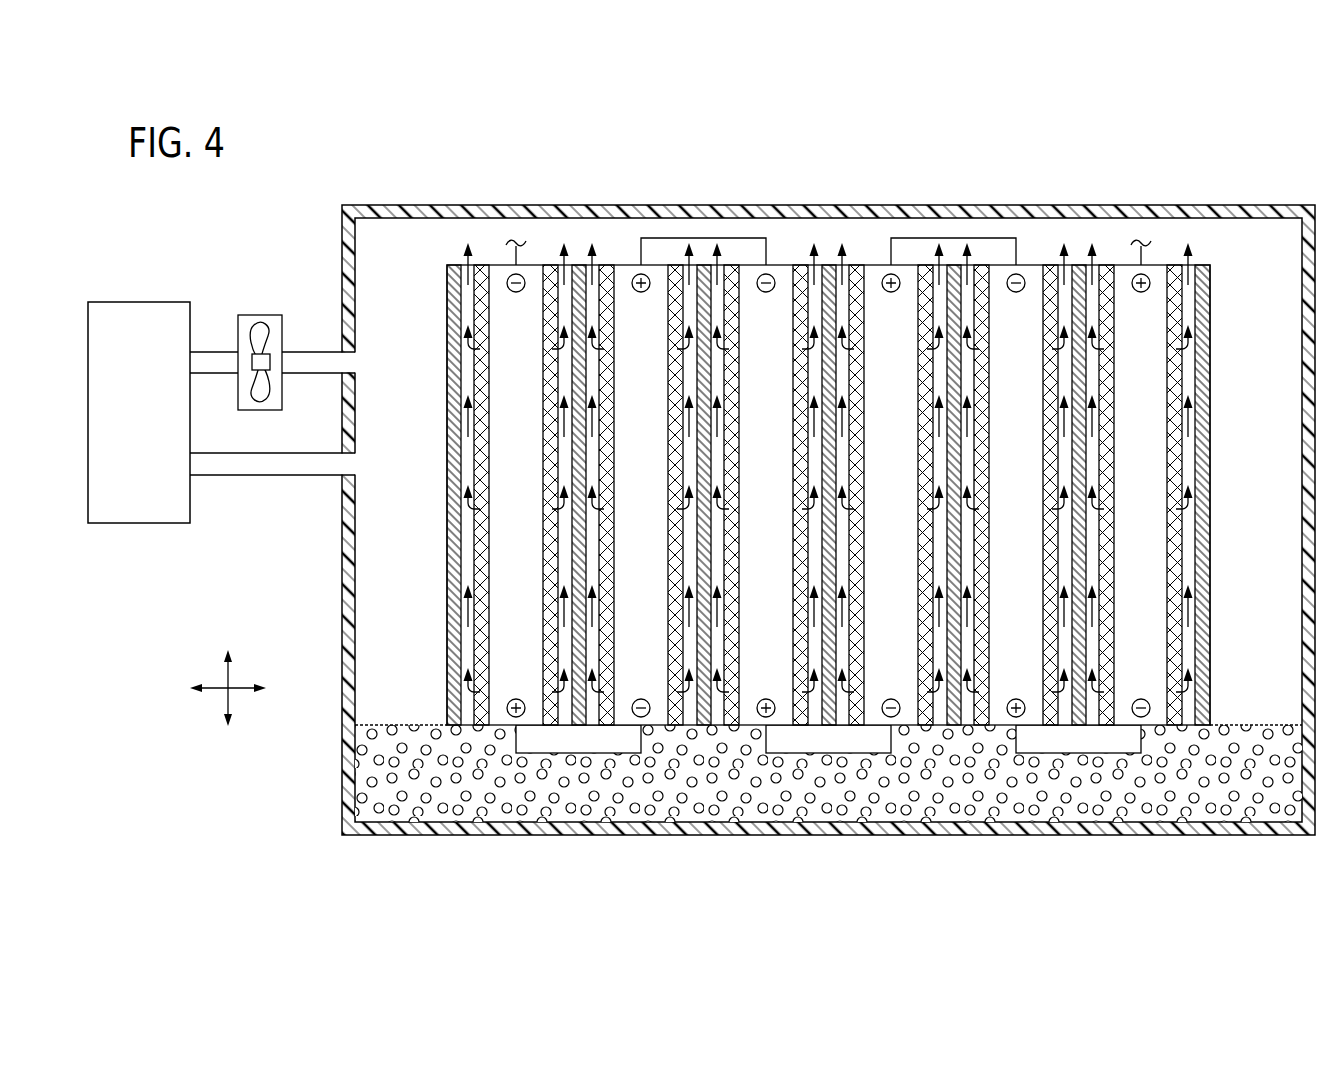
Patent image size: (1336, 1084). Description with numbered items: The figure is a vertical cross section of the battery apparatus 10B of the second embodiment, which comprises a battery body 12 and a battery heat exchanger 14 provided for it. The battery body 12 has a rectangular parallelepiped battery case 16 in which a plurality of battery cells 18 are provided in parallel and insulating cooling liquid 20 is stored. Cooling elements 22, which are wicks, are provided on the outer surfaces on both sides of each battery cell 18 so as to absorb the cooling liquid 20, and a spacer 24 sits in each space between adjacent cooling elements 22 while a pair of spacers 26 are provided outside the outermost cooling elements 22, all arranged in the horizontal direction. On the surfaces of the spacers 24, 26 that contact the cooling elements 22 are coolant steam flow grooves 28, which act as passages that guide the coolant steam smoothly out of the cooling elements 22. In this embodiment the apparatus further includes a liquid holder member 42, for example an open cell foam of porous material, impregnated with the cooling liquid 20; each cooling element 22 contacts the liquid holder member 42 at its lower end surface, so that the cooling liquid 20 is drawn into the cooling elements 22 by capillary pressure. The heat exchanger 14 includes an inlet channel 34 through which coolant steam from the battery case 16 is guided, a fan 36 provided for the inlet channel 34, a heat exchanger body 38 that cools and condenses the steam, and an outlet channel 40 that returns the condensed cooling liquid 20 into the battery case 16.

The battery apparatus 10B is at (317, 172).
The battery body 12 is at (778, 198).
The battery heat exchanger 14 is at (202, 272).
The battery case 16 is at (425, 207).
The battery cells 18 is at (626, 275).
The cooling liquid 20 is at (1240, 800).
The cooling elements 22 is at (550, 318).
The spacer 24 is at (573, 456).
The spacers 26 is at (452, 353).
The coolant steam flow grooves 28 is at (553, 364).
The inlet channel 34 is at (311, 352).
The fan 36 is at (262, 318).
The heat exchanger body 38 is at (142, 522).
The outlet channel 40 is at (293, 470).
The liquid holder member 42 is at (1239, 732).